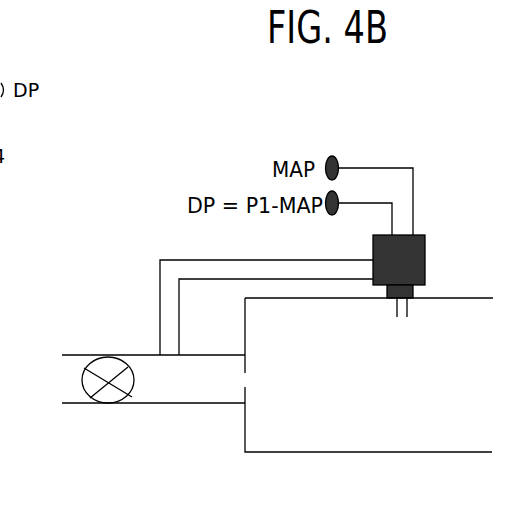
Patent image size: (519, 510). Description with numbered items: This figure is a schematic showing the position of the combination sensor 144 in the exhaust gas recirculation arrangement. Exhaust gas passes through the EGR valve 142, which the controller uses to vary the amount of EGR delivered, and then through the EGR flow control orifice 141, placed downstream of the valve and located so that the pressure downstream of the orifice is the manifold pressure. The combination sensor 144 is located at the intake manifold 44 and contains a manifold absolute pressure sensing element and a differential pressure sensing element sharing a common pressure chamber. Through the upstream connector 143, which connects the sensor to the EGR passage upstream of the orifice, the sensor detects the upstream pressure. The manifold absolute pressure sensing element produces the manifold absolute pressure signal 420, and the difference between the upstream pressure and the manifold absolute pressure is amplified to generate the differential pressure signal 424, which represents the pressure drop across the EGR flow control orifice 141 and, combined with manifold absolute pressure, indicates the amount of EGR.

The MAP signal 420 is at (358, 163).
The differential pressure (DP) signal 424 is at (358, 207).
The combination sensor 144 is at (422, 233).
The intake manifold 44 is at (438, 297).
The EGR flow control orifice 141 is at (245, 380).
The EGR valve 142 is at (82, 372).
The upstream connector 143 is at (160, 302).